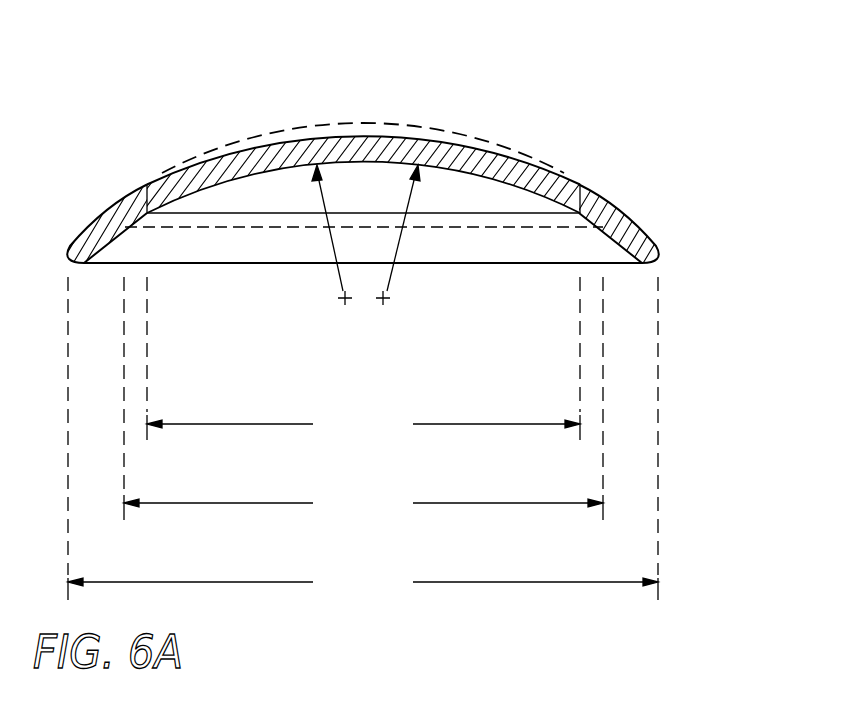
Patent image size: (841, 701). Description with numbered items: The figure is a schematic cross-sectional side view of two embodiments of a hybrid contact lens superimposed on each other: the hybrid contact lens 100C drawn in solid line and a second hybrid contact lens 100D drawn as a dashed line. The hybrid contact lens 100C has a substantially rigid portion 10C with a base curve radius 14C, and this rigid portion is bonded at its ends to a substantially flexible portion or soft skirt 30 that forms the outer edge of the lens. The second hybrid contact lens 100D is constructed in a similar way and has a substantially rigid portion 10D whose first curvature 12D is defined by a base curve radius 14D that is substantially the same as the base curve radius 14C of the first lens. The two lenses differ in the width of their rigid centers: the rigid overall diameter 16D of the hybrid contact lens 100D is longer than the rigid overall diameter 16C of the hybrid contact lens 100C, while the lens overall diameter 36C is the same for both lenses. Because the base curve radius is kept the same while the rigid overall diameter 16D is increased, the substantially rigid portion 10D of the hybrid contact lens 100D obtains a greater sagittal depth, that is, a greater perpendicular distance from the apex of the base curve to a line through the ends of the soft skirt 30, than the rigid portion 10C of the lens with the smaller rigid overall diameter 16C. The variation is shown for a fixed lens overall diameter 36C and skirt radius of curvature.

The hybrid contact lens 100C is at (512, 44).
The second hybrid contact lens 100D is at (379, 305).
The substantially rigid portion 10C is at (309, 139).
The substantially rigid portion 10D is at (459, 131).
The first curvature 12D is at (417, 125).
The substantially flexible portion or soft skirt 30 is at (646, 227).
The base curve radius 14C is at (331, 232).
The base curve radius 14D is at (391, 230).
The rigid overall diameter 16C is at (363, 358).
The rigid overall diameter 16D is at (363, 398).
The lens overall diameter 36C is at (363, 438).